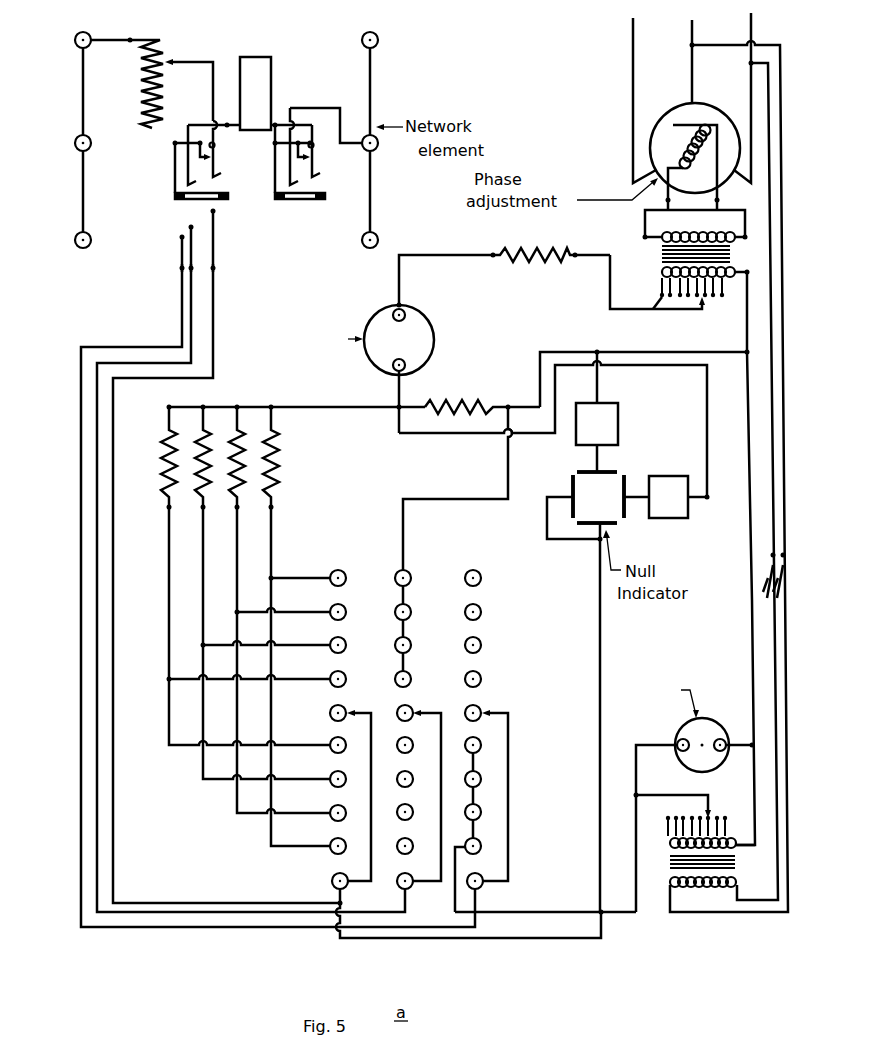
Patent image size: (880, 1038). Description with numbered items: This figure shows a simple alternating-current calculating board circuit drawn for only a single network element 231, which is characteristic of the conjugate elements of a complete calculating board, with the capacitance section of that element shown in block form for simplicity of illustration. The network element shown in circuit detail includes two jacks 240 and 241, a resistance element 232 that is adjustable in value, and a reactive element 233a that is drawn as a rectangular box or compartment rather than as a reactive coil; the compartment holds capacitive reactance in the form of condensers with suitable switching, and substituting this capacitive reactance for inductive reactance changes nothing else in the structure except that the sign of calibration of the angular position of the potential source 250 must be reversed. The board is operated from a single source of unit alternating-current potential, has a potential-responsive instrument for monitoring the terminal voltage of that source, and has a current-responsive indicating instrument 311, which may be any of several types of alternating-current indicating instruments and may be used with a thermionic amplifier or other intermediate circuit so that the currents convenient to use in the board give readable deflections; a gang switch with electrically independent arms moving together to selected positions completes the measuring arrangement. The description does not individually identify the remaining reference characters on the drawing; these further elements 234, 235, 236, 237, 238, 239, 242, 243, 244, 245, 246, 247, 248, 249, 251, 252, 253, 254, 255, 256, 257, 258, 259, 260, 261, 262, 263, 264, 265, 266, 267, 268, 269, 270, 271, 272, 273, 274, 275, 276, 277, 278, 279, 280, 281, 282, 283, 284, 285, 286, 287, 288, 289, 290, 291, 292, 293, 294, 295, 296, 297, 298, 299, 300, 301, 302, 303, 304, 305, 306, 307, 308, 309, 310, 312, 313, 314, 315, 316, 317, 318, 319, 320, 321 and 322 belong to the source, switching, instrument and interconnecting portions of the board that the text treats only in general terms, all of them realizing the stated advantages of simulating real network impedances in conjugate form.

The network element 231 is at (388, 75).
The resistance element 232 is at (148, 98).
The reactive element 233a is at (262, 75).
The adjustable tap conductor 234 is at (182, 62).
The conductor 235 is at (294, 121).
The relay contact 236 is at (216, 157).
The relay contact 237 is at (315, 158).
The terminal conductor 238 is at (82, 196).
The terminal conductor 239 is at (373, 112).
The jack 240 is at (168, 201).
The jack 241 is at (316, 207).
The relay armature 242 is at (187, 173).
The relay armature 243 is at (289, 172).
The base support 244 is at (228, 200).
The base support 245 is at (326, 198).
The conductor 246 is at (80, 455).
The conductor 247 is at (96, 406).
The conductor 248 is at (215, 330).
The conductor terminals 249 is at (224, 259).
The potential source 250 is at (644, 124).
The conductor 251 is at (679, 103).
The rotor winding 252 is at (688, 168).
The transformer primary winding 253 is at (733, 232).
The transformer core 254 is at (654, 257).
The tapped secondary winding 255 is at (662, 278).
The winding tap 256 is at (661, 302).
The winding tap 257 is at (706, 304).
The conductor 258 is at (748, 371).
The conductor 259 is at (472, 258).
The transformer core 260 is at (742, 868).
The transformer winding 261 is at (705, 890).
The conductor 262 is at (773, 660).
The conductor 263 is at (785, 688).
The switch 264 is at (771, 569).
The tapped winding 265 is at (670, 843).
The conductor 266 is at (687, 793).
The conductor 267 is at (556, 915).
The conductor 268 is at (751, 780).
The voltage responsive device 269 is at (686, 722).
The switch contact bank 270 is at (420, 562).
The switch arm 271 is at (370, 861).
The switch arm 272 is at (440, 862).
The switch arm 273 is at (510, 881).
The contact 274 is at (347, 679).
The contact 275 is at (347, 645).
The contact 276 is at (347, 612).
The contact 277 is at (347, 578).
The contact 278 is at (329, 714).
The contact 279 is at (330, 751).
The contact 280 is at (330, 785).
The contact 281 is at (330, 819).
The contact 282 is at (411, 679).
The contact 283 is at (411, 645).
The contact 284 is at (411, 612).
The contact 285 is at (411, 578).
The contact 286 is at (393, 721).
The contact 287 is at (398, 752).
The contact 288 is at (398, 786).
The contact 289 is at (398, 820).
The contact 290 is at (481, 679).
The contact 291 is at (481, 645).
The contact 292 is at (481, 612).
The contact 293 is at (481, 578).
The contact 294 is at (465, 744).
The contact 295 is at (482, 782).
The contact 296 is at (482, 816).
The contact 297 is at (482, 849).
The conductor 298 is at (421, 497).
The contact connection 299 is at (468, 768).
The conductor 300 is at (169, 592).
The conductor 301 is at (203, 563).
The conductor 302 is at (237, 533).
The conductor 303 is at (273, 541).
The resistor 304 is at (164, 478).
The resistor 305 is at (200, 432).
The resistor 306 is at (240, 432).
The resistor 307 is at (276, 462).
The conductor 308 is at (326, 410).
The resistor 309 is at (476, 400).
The junction conductor 310 is at (407, 405).
The current responsive instrument 311 is at (436, 340).
The conductor 312 is at (397, 398).
The resistor 313 is at (549, 250).
The conductors 314 is at (542, 351).
The null indicator 315 is at (562, 472).
The upper deflecting plate 316 is at (606, 470).
The lower deflecting plate 317 is at (609, 529).
The left deflecting plate 318 is at (570, 484).
The right deflecting plate 319 is at (627, 478).
The conductor 320 is at (546, 538).
The vertical amplifier 321 is at (618, 428).
The horizontal amplifier 322 is at (680, 519).